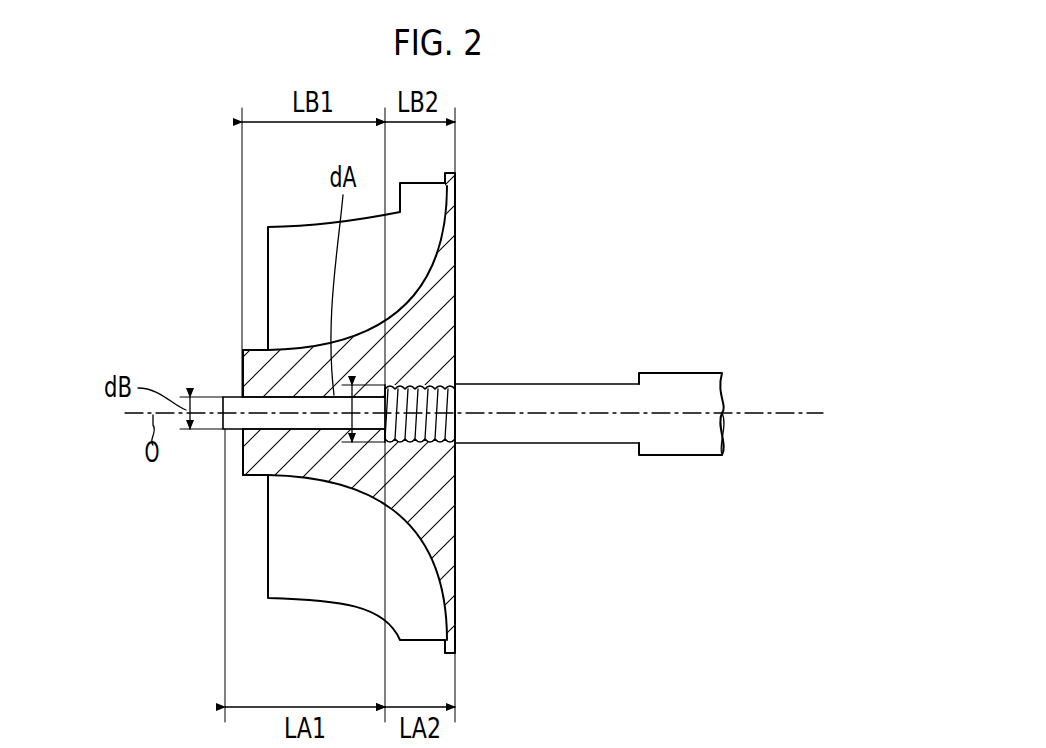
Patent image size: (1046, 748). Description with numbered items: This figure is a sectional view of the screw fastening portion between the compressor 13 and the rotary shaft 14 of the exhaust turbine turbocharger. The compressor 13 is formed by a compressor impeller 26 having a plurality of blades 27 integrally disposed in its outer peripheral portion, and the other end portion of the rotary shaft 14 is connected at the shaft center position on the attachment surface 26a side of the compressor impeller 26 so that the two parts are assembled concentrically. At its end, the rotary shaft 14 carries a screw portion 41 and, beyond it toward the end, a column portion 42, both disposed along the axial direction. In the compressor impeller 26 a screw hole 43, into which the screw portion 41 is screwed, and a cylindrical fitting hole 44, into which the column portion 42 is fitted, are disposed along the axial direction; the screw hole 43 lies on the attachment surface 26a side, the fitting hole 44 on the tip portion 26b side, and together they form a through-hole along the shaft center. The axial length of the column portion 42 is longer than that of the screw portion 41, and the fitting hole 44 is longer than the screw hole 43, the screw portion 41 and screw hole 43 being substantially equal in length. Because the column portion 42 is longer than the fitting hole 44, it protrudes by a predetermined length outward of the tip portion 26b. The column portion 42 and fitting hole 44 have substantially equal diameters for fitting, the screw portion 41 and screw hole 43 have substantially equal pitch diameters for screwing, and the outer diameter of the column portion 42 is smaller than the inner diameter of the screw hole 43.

The compressor 13 is at (234, 366).
The rotary shaft 14 is at (688, 364).
The compressor impeller 26 is at (263, 468).
The attachment surface 26a is at (458, 520).
The tip portion 26b is at (243, 456).
The blades 27 is at (305, 250).
The screw portion 41 is at (445, 318).
The column portion 42 is at (305, 396).
The screw hole 43 is at (456, 443).
The fitting hole 44 is at (323, 428).